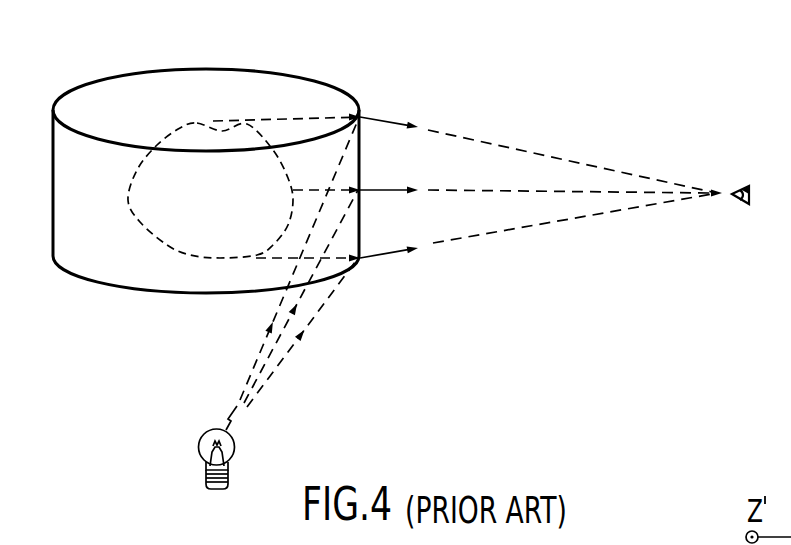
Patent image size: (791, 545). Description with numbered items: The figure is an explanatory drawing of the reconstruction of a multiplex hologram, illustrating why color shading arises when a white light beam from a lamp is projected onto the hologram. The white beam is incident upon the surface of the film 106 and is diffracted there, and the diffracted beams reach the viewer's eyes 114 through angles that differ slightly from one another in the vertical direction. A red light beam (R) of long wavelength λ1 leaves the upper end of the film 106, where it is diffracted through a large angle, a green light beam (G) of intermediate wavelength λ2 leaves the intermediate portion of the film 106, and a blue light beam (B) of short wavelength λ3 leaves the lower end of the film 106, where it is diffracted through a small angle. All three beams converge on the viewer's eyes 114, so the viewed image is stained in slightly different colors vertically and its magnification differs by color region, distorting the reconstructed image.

The film 106 is at (318, 81).
The viewer's eyes 114 is at (740, 186).
The wavelength λ 1 is at (462, 243).
The wavelength λ 2 is at (483, 279).
The wavelength λ 3 is at (479, 300).